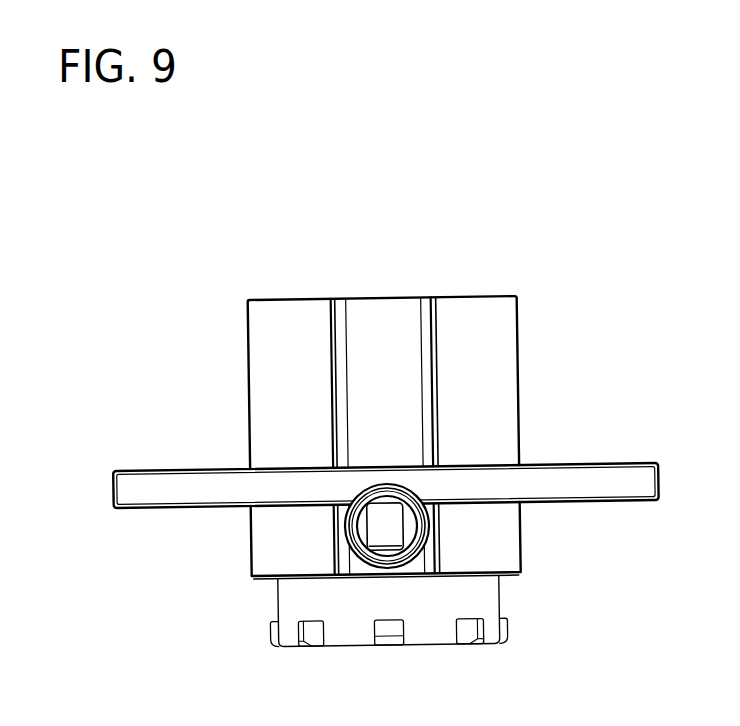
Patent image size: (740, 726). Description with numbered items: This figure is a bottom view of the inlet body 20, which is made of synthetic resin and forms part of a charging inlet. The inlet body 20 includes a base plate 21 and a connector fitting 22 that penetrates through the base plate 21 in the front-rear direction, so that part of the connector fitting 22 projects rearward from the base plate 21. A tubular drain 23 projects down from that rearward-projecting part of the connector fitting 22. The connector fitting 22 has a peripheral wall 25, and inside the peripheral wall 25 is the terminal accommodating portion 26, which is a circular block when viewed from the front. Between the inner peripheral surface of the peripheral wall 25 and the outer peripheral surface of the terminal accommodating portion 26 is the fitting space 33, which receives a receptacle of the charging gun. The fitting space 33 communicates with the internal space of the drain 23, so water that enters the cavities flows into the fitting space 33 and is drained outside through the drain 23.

The inlet body 20 is at (390, 221).
The base plate 21 is at (625, 477).
The connector fitting 22 is at (381, 297).
The drain 23 is at (377, 562).
The peripheral wall 25 is at (495, 342).
The terminal accommodating portion 26 is at (360, 531).
The fitting space 33 is at (405, 528).